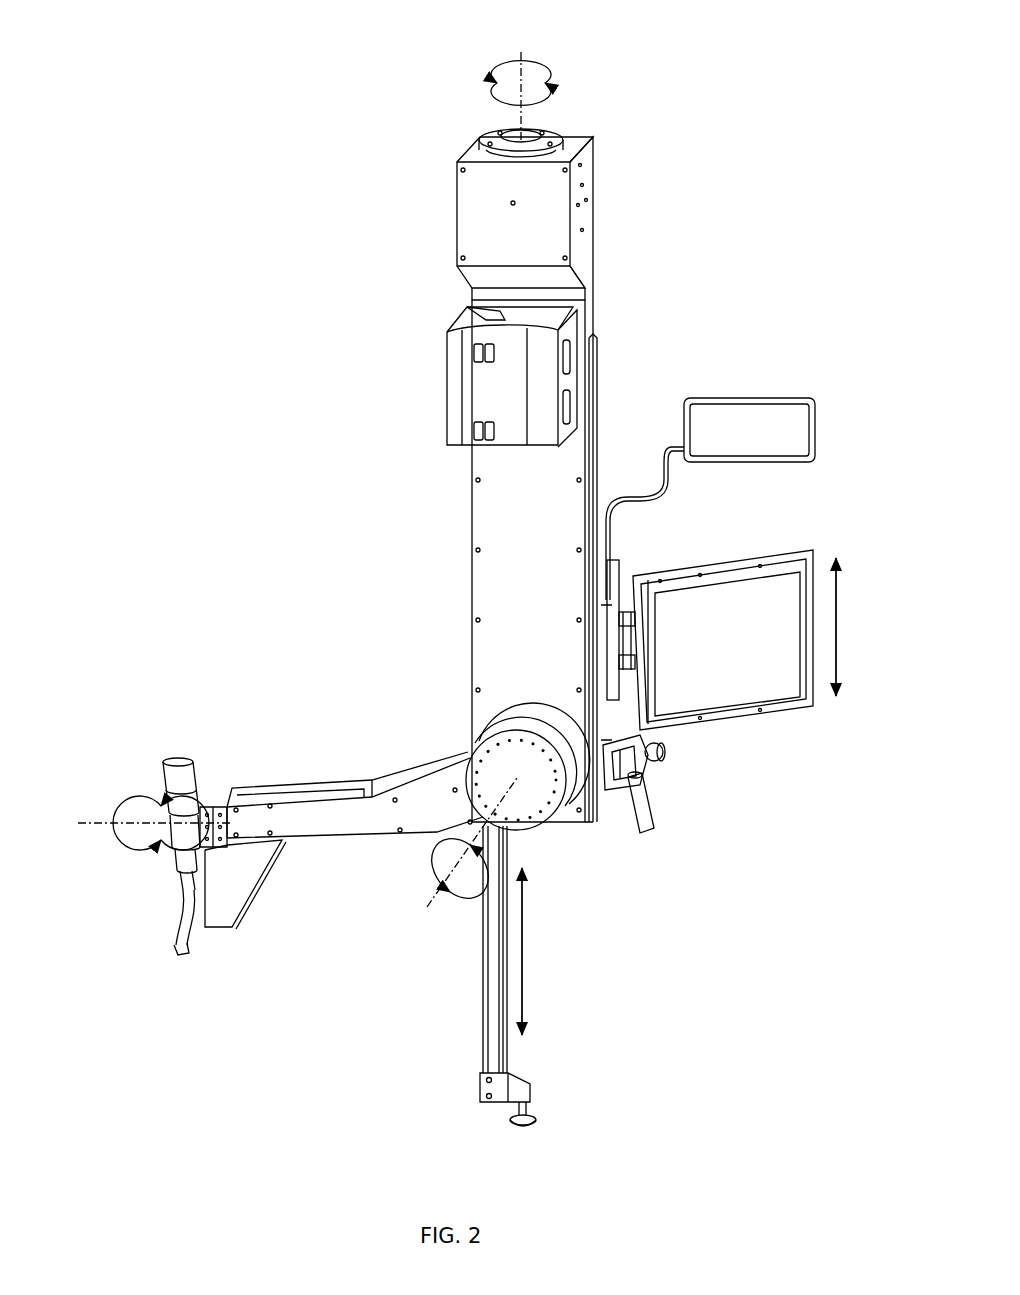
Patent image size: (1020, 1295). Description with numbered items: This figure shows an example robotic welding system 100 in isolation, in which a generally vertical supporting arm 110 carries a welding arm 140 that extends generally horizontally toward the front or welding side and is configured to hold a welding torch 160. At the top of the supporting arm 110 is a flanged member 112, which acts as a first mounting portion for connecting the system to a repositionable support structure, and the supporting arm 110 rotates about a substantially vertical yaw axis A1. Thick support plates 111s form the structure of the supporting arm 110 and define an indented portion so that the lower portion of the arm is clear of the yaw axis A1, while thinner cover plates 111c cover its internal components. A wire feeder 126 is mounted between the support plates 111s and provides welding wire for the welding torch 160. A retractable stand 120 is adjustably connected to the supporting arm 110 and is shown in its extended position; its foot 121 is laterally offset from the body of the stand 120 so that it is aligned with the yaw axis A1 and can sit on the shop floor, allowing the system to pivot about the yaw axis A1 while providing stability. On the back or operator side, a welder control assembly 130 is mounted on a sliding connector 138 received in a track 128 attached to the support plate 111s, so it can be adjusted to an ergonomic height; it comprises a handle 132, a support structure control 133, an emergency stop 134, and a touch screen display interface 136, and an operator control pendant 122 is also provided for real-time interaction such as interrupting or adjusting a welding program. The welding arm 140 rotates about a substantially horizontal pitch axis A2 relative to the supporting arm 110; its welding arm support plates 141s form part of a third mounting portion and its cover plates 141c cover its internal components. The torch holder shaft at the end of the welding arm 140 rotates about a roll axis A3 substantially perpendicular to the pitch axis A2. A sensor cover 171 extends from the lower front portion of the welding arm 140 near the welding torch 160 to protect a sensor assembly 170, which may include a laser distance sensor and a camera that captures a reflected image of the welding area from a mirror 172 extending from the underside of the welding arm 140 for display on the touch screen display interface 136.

The robotic welding system 100 is at (330, 52).
The supporting arm 110 is at (605, 153).
The supporting arm support plates 111s is at (580, 258).
The cover plates 111c is at (490, 517).
The flanged member 112 is at (488, 120).
The yaw axis A1 is at (523, 64).
The retractable stand 120 is at (480, 970).
The foot 121 is at (537, 1122).
The operator control pendant 122 is at (778, 396).
The wire feeder 126 is at (447, 394).
The track 128 is at (590, 370).
The welder control assembly 130 is at (835, 822).
The handle 132 is at (648, 823).
The support structure control 133 is at (652, 768).
The emergency stop 134 is at (665, 750).
The touch screen display interface 136 is at (722, 605).
The sliding connector 138 is at (605, 650).
The welding arm 140 is at (415, 750).
The cover plates 141c is at (290, 790).
The welding arm support plates 141s is at (357, 820).
The pitch axis A2 is at (503, 800).
The welding torch 160 is at (177, 757).
The sensor assembly 170 is at (272, 888).
The sensor cover 171 is at (233, 876).
The mirror 172 is at (250, 906).
The roll axis A3 is at (78, 822).